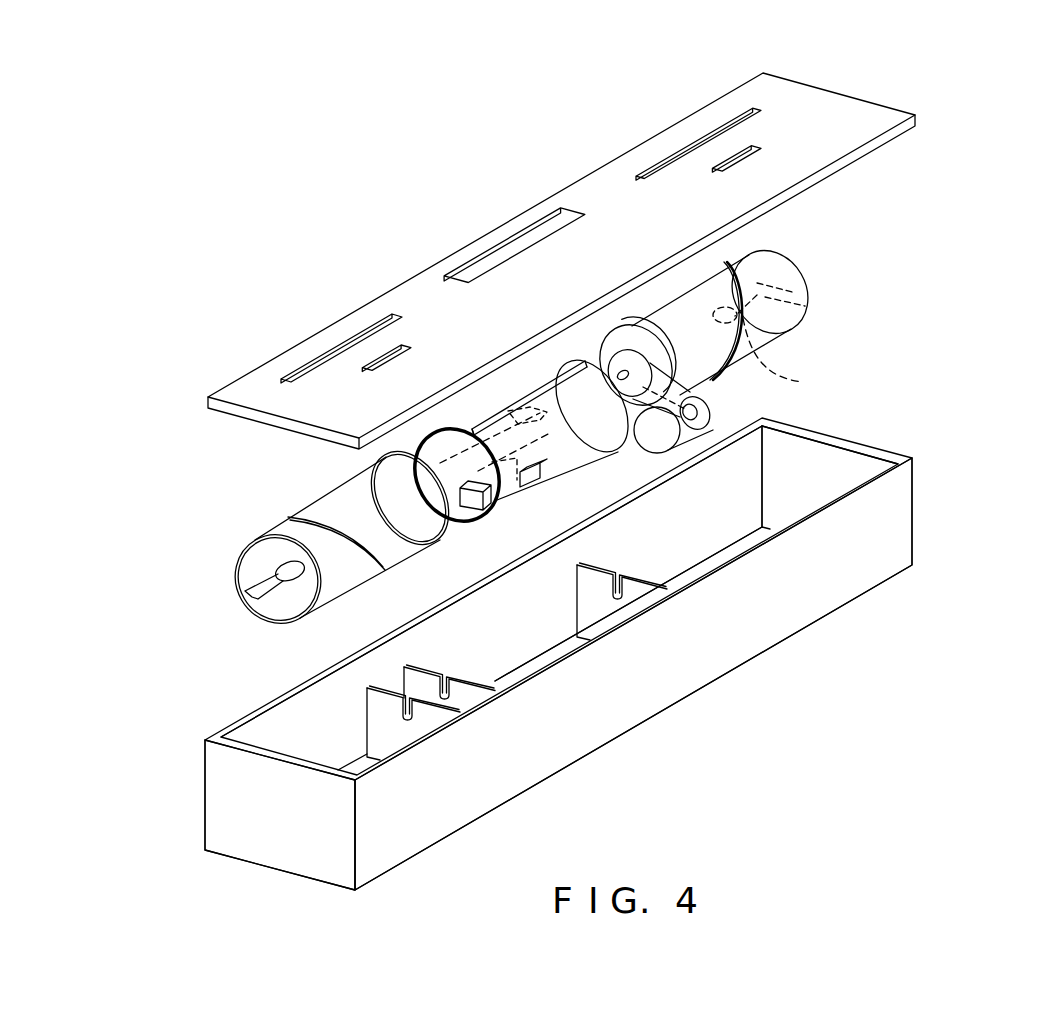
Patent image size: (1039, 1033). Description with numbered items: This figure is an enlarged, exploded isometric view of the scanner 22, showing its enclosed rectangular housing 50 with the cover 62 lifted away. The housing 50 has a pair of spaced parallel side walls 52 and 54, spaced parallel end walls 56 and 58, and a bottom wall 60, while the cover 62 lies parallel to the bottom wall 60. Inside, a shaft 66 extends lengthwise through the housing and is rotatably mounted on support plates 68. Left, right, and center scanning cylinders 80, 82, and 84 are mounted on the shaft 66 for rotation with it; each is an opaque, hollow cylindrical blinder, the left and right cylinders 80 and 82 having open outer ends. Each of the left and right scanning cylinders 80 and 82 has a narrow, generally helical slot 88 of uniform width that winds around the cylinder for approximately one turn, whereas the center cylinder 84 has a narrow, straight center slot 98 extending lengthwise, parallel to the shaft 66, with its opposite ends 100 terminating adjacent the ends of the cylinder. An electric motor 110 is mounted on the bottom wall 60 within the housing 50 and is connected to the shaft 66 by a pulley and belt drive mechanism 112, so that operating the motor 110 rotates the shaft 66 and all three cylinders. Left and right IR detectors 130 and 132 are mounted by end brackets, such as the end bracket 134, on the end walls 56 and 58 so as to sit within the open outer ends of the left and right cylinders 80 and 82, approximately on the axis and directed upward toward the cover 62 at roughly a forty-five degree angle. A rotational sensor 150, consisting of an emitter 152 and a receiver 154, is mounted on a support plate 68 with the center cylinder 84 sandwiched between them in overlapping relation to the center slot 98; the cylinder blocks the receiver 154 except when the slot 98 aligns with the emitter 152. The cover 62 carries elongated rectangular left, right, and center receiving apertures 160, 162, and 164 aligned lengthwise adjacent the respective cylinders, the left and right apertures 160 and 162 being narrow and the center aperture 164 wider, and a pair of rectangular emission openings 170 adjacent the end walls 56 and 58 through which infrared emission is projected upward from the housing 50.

The scanner 22 is at (248, 350).
The housing 50 is at (872, 443).
The side wall 52 is at (535, 618).
The side wall 54 is at (787, 603).
The end wall 56 is at (283, 808).
The end wall 58 is at (819, 477).
The bottom wall 60 is at (363, 763).
The cover 62 is at (242, 418).
The shaft 66 is at (437, 465).
The support plates 68 is at (377, 705).
The left scanning cylinder 80 is at (328, 502).
The right scanning cylinder 82 is at (787, 327).
The center scanning cylinder 84 is at (579, 449).
The helical slot 88 is at (337, 522).
The center slot 98 is at (530, 390).
The ends of center slot 100 is at (477, 427).
The electric motor 110 is at (710, 424).
The pulley and belt drive mechanism 112 is at (630, 330).
The left IR detector 130 is at (279, 565).
The right IR detector 132 is at (793, 377).
The end bracket 134 is at (257, 597).
The rotational sensor 150 is at (502, 498).
The emitter 152 is at (540, 481).
The receiver 154 is at (537, 437).
The left receiving aperture 160 is at (387, 317).
The right receiving aperture 162 is at (743, 110).
The center receiving aperture 164 is at (547, 220).
The emission openings 170 is at (393, 368).